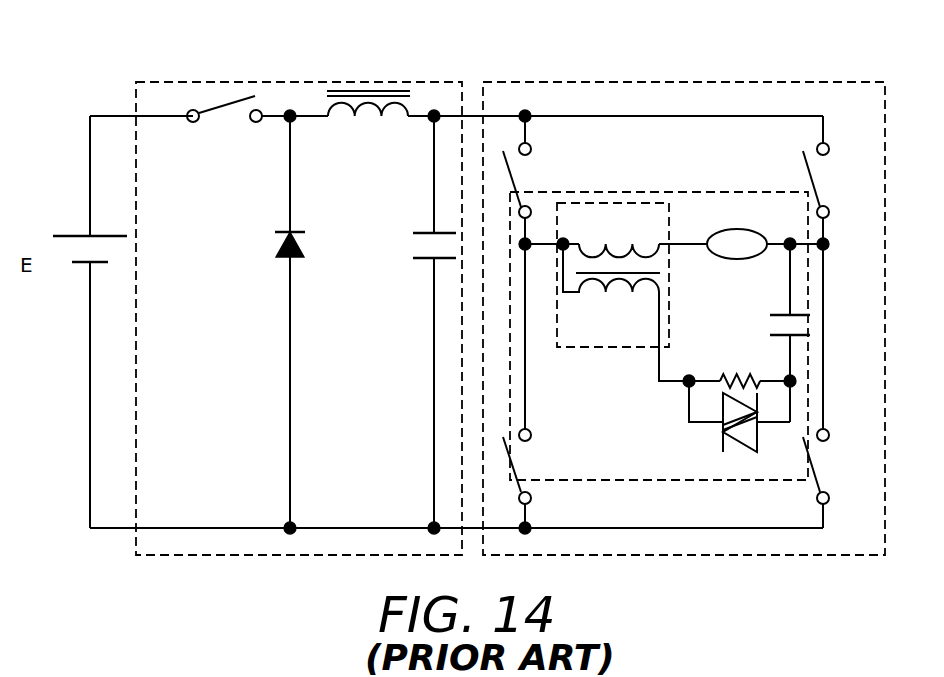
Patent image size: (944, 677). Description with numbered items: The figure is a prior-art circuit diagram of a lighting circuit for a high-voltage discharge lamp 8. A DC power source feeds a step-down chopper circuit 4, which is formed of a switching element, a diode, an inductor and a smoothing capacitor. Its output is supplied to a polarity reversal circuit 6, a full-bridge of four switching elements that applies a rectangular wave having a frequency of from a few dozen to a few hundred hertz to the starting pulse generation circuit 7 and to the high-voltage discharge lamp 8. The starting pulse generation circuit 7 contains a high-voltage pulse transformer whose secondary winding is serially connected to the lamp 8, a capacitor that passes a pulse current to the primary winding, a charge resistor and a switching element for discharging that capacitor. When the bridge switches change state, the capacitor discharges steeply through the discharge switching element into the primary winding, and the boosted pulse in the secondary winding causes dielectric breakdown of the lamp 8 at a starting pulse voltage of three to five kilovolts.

The step-down chopper circuit 4 is at (272, 82).
The polarity reversal circuit 6 is at (663, 82).
The starting pulse generation circuit 7 is at (695, 192).
The high-voltage discharge lamp 8 is at (742, 228).